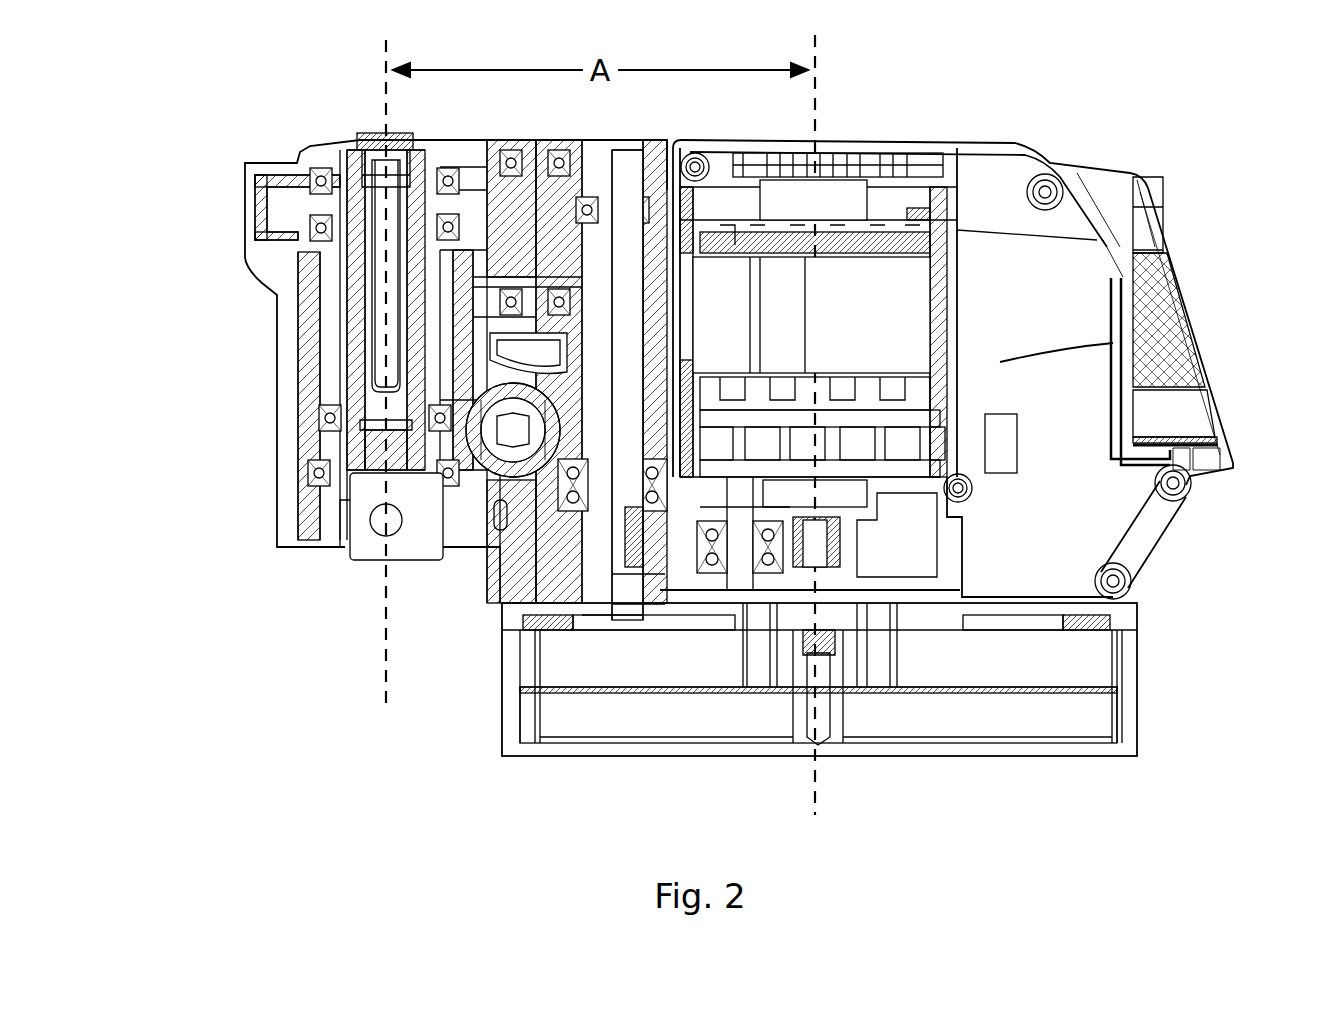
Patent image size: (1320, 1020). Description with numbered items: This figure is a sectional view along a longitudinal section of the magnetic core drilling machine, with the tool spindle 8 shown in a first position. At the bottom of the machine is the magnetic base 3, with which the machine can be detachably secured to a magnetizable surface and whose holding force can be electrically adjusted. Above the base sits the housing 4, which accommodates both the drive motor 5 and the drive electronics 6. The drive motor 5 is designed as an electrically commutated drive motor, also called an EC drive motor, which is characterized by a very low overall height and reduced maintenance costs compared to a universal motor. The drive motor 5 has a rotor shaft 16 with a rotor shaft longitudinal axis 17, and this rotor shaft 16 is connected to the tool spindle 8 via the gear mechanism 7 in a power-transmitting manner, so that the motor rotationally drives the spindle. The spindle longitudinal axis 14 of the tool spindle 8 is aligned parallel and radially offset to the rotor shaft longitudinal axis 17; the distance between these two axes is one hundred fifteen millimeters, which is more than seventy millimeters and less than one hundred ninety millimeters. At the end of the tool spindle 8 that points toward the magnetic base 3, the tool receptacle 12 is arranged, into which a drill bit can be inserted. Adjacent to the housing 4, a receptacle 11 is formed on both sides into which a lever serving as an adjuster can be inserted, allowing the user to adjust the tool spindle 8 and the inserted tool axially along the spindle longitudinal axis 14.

The magnetic base 3 is at (1112, 705).
The housing 4 is at (1152, 527).
The drive motor 5 is at (882, 297).
The drive electronics 6 is at (1075, 453).
The gear mechanism 7 is at (634, 397).
The tool spindle 8 is at (357, 379).
The receptacle 11 is at (518, 437).
The tool receptacle 12 is at (342, 550).
The spindle longitudinal axis 14 is at (386, 122).
The rotor shaft 16 is at (822, 548).
The rotor shaft longitudinal axis 17 is at (815, 127).